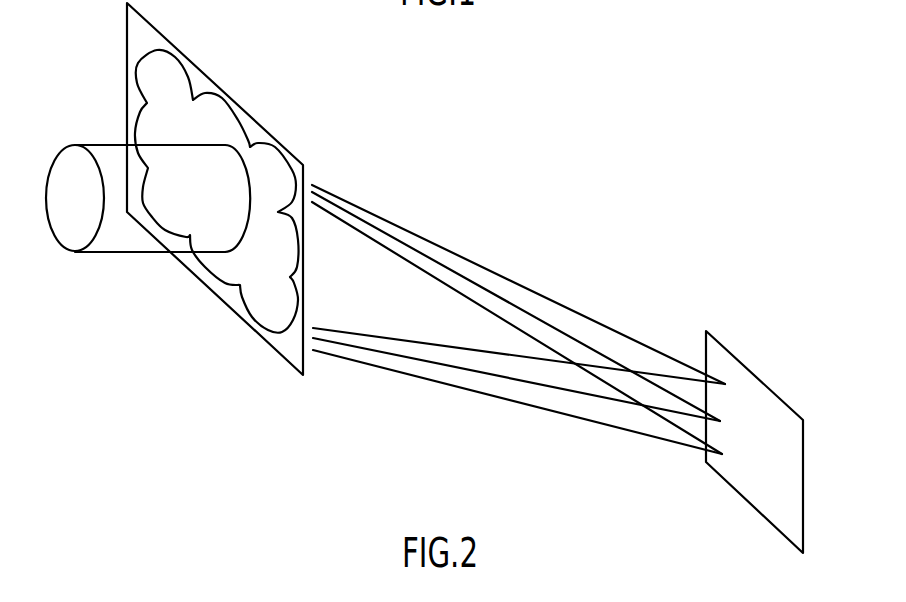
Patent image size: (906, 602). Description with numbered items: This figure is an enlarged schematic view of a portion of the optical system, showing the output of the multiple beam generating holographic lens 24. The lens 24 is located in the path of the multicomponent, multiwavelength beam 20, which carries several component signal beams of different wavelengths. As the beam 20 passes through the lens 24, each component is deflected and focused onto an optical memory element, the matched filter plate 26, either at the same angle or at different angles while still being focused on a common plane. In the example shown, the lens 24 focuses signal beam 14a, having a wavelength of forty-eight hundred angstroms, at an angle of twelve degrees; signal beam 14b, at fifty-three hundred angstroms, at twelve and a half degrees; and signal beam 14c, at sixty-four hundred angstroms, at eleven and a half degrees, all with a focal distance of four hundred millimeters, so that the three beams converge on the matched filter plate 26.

The multicomponent, multiwavelength beam 20 is at (117, 252).
The multiple beam generating holographic lens 24 is at (285, 146).
The signal beam 14a is at (357, 207).
The signal beam 14b is at (485, 290).
The signal beam 14c is at (507, 398).
The matched filter plate 26 is at (758, 378).